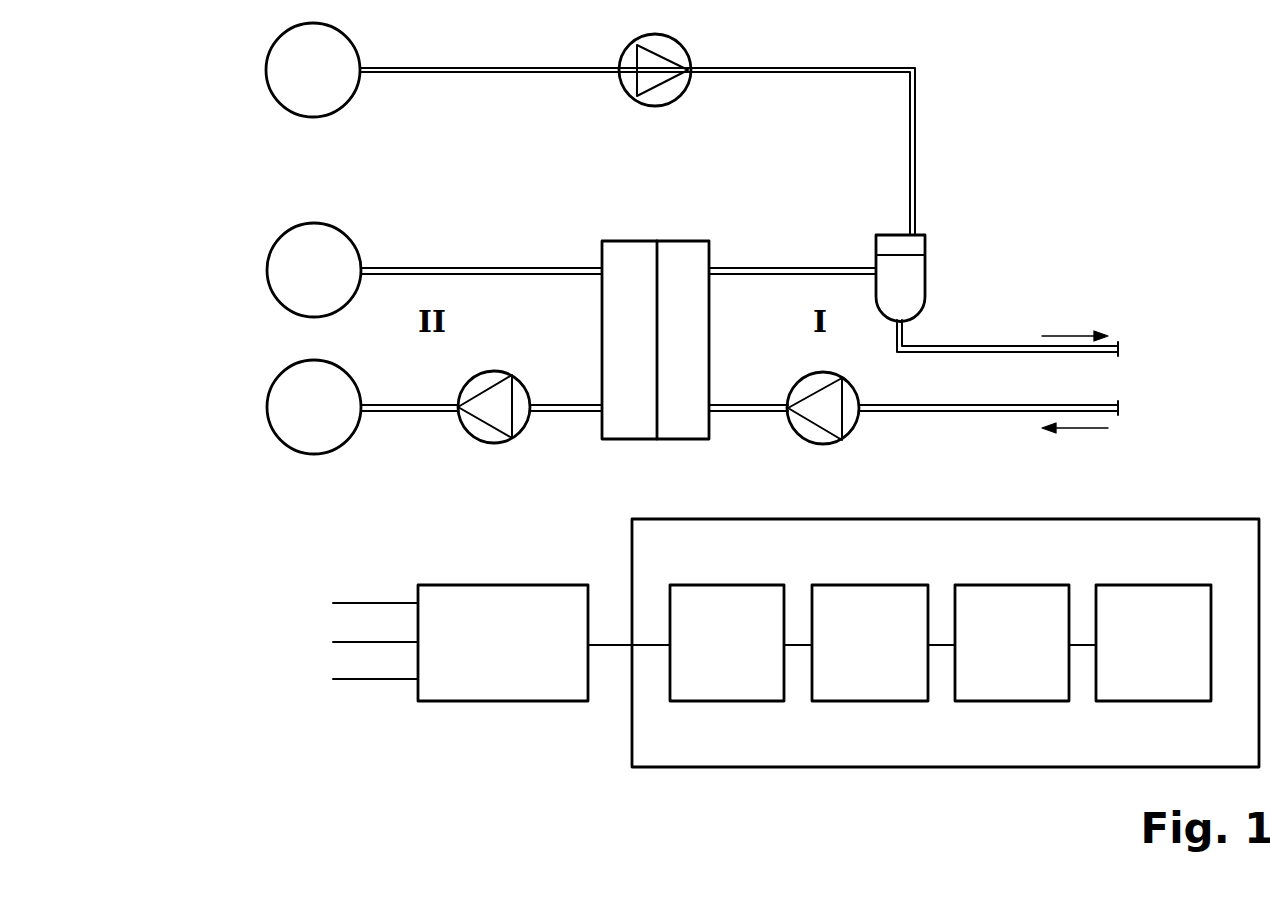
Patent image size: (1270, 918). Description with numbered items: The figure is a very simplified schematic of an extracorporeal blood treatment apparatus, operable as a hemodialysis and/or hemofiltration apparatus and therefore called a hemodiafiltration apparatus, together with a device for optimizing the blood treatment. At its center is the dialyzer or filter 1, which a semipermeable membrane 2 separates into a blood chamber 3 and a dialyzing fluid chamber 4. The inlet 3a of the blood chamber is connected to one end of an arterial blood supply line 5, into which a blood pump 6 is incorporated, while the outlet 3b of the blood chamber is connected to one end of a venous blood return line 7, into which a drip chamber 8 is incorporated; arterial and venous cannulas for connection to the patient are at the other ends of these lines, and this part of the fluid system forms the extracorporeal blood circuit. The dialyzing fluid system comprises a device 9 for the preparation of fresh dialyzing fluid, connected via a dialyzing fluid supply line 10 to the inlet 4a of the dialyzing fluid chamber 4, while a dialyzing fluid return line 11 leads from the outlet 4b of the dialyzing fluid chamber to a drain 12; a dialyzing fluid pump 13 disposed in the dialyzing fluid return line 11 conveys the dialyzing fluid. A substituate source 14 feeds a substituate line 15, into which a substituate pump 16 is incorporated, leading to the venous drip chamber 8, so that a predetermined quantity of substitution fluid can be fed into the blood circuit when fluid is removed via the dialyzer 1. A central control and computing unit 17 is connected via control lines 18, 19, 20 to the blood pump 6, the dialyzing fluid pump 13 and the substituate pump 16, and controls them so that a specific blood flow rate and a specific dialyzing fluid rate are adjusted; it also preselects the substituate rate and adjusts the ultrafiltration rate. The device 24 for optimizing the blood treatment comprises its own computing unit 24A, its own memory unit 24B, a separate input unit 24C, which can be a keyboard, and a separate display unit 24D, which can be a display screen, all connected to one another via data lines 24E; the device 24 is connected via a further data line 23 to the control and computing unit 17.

The dialyzer 1 is at (702, 240).
The semipermeable membrane 2 is at (656, 244).
The blood chamber 3 is at (710, 318).
The inlet of the blood chamber 3a is at (712, 413).
The outlet of the blood chamber 3b is at (712, 268).
The dialyzing fluid chamber 4 is at (603, 318).
The inlet of the dialyzing fluid chamber 4a is at (600, 268).
The outlet of the dialyzing fluid chamber 4b is at (600, 413).
The arterial blood supply line 5 is at (948, 413).
The blood pump 6 is at (852, 434).
The venous blood return line 7 is at (813, 266).
The drip chamber 8 is at (926, 274).
The device for the preparation of fresh dialyzing fluid 9 is at (267, 270).
The dialyzing fluid supply line 10 is at (465, 266).
The dialyzing fluid return line 11 is at (402, 413).
The drain 12 is at (267, 407).
The dialyzing fluid pump 13 is at (487, 441).
The substituate source 14 is at (265, 70).
The substituate line 15 is at (465, 74).
The substituate pump 16 is at (619, 92).
The control and computing unit 17 is at (512, 702).
The control line 18 is at (356, 679).
The control line 19 is at (356, 642).
The control line 20 is at (356, 603).
The data line 23 is at (606, 648).
The device for optimizing the blood treatment 24 is at (1197, 517).
The computing unit 24A is at (719, 585).
The memory unit 24B is at (859, 585).
The input unit 24C is at (999, 585).
The display unit 24D is at (1139, 585).
The data lines 24E is at (796, 648).